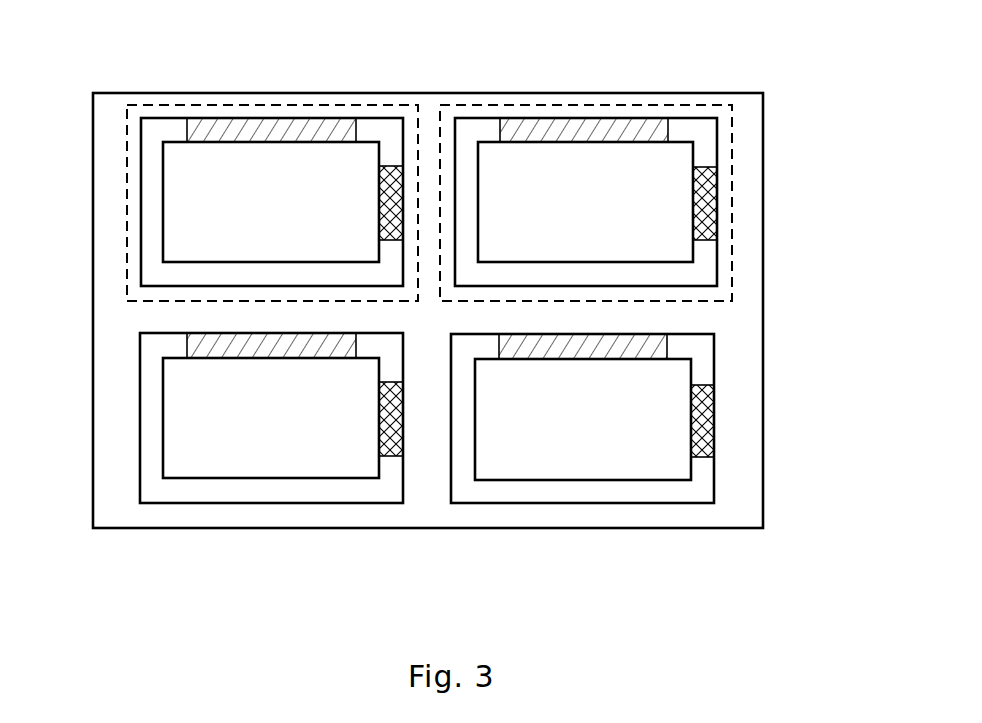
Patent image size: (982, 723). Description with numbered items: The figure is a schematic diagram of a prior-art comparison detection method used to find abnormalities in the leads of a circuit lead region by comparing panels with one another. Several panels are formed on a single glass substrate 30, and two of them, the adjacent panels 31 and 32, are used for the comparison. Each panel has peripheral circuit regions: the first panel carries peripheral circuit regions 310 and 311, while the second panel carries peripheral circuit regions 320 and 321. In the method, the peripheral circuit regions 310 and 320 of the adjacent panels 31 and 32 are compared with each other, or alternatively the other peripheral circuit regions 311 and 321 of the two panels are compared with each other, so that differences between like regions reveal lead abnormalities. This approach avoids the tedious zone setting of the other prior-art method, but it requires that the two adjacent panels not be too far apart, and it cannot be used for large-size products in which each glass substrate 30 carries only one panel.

The glass substrate 30 is at (738, 396).
The panel 31 is at (134, 293).
The panel 32 is at (730, 293).
The peripheral circuit region 310 is at (283, 129).
The peripheral circuit region 311 is at (394, 170).
The peripheral circuit region 320 is at (639, 129).
The peripheral circuit region 321 is at (700, 170).